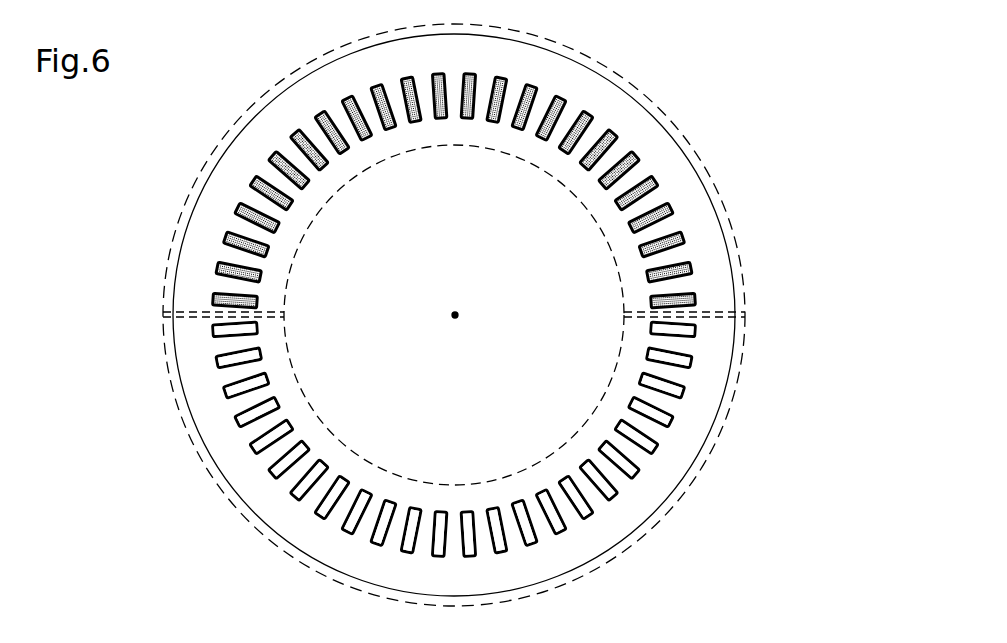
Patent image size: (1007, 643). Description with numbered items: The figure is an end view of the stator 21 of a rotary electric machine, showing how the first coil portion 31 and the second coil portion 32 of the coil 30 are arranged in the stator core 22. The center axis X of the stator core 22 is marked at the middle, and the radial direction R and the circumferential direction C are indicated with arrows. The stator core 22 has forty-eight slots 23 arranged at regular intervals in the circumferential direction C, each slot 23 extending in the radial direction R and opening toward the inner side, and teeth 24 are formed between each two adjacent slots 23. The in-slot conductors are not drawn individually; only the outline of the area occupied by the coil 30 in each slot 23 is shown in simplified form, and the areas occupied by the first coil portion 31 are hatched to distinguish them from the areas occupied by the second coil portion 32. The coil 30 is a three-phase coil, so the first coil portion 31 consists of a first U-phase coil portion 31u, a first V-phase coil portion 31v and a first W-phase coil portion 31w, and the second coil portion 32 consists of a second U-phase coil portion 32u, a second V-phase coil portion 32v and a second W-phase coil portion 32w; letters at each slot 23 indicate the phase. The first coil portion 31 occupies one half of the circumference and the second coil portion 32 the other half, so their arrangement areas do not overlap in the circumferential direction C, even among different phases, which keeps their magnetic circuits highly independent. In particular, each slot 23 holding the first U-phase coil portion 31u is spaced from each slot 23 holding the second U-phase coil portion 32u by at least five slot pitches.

The stator 21 is at (773, 110).
The stator core 22 is at (722, 259).
The slot 23 is at (278, 221).
The tooth 24 is at (280, 204).
The coil 30 is at (484, 309).
The first coil portion 31 is at (727, 207).
The second coil portion 32 is at (737, 382).
The first U-phase coil portion 31u is at (378, 86).
The first V-phase coil portion 31v is at (435, 72).
The first W-phase coil portion 31w is at (470, 72).
The second U-phase coil portion 32u is at (241, 423).
The second V-phase coil portion 32v is at (318, 514).
The second W-phase coil portion 32w is at (270, 474).
The circumferential direction C is at (644, 58).
The radial direction R is at (438, 332).
The center axis X is at (458, 317).